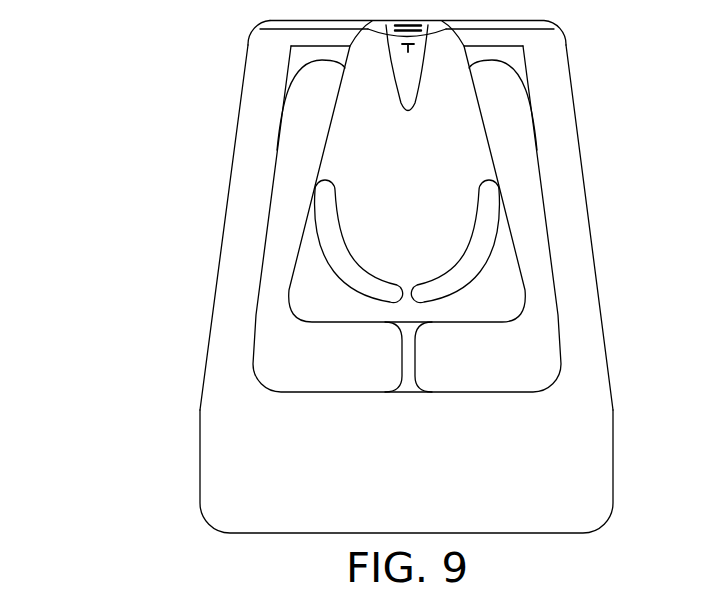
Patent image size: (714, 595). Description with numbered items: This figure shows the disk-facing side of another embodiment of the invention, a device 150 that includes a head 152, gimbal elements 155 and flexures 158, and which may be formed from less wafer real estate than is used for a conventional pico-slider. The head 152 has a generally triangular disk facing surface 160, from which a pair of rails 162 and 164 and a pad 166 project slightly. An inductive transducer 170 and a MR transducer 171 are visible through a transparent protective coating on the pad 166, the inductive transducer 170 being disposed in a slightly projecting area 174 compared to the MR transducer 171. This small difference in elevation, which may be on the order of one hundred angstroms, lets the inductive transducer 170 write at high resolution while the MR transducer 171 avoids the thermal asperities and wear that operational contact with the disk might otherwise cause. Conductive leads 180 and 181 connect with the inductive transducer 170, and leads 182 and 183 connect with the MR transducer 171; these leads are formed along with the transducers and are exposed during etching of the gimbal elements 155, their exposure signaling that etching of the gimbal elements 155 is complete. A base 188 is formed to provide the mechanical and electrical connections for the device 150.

The device 150 is at (120, 181).
The head 152 is at (527, 303).
The gimbal elements 155 is at (314, 61).
The flexures 158 is at (578, 233).
The disk facing surface 160 is at (430, 204).
The rail 162 is at (337, 249).
The rail 164 is at (477, 249).
The pad 166 is at (417, 106).
The inductive transducer 170 is at (393, 36).
The MR transducer 171 is at (400, 85).
The slightly projecting area 174 is at (432, 35).
The conductive lead 180 is at (260, 29).
The conductive lead 181 is at (554, 29).
The lead 182 is at (277, 31).
The lead 183 is at (537, 31).
The base 188 is at (227, 460).